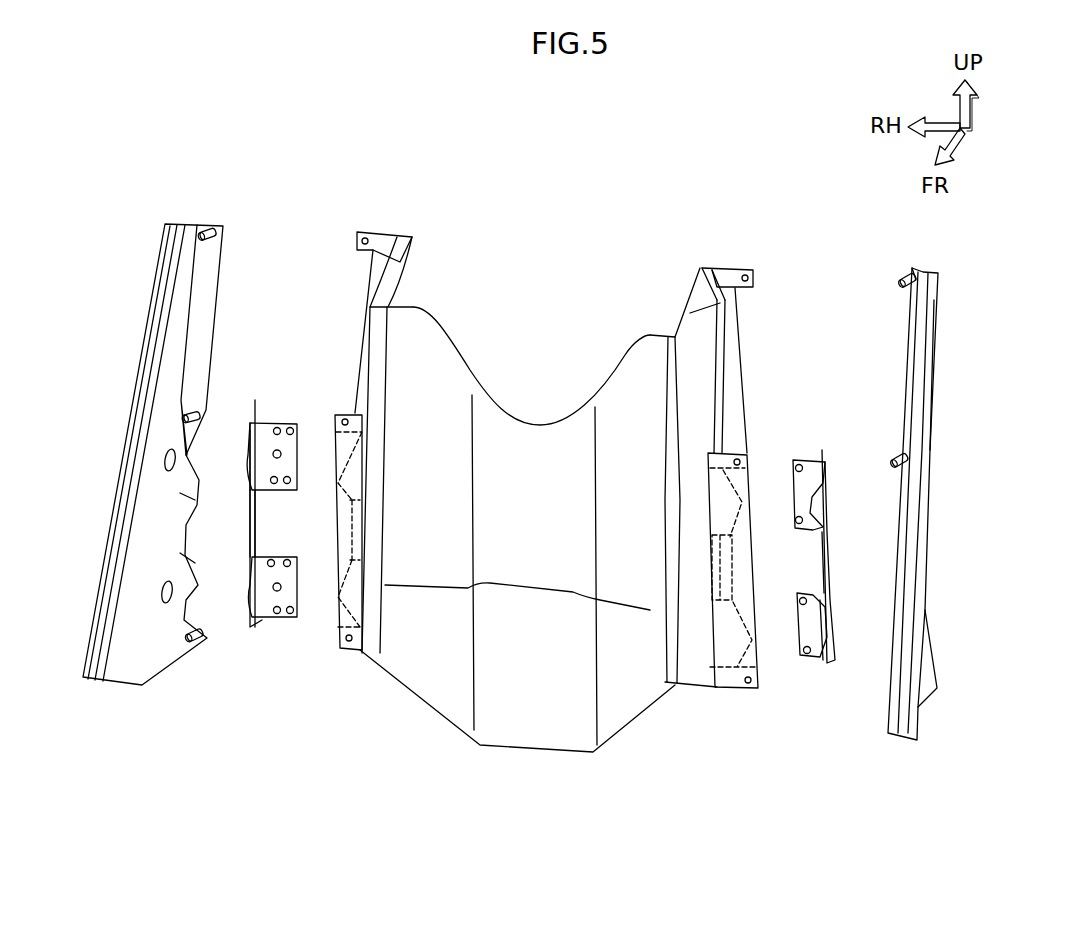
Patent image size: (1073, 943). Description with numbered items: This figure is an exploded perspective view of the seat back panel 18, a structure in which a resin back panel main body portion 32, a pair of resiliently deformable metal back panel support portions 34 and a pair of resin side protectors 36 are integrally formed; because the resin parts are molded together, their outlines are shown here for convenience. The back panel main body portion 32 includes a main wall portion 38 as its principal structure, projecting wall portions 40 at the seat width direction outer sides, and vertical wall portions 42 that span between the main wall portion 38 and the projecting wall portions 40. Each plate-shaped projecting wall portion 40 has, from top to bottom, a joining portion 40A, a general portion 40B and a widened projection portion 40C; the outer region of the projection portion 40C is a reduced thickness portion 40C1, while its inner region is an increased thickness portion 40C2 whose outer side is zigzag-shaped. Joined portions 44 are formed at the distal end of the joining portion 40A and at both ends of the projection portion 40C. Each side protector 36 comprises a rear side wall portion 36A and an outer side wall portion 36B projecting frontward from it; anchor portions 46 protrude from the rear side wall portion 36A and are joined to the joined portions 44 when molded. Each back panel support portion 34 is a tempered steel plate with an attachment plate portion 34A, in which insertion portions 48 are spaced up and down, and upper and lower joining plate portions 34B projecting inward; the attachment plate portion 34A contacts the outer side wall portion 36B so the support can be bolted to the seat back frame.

The seat back panel 18 is at (328, 792).
The back panel main body portion 32 is at (435, 745).
The back panel support portion 34 is at (247, 542).
The attachment plate portion 34A is at (257, 480).
The joining plate portion 34B is at (283, 482).
The side protector 36 is at (140, 300).
The rear side wall portion 36A is at (212, 287).
The outer side wall portion 36B is at (186, 222).
The main wall portion 38 is at (522, 440).
The projecting wall portion 40 is at (542, 428).
The joining portion 40A is at (395, 240).
The general portion 40B is at (370, 265).
The projection portion 40C is at (338, 632).
The reduced thickness portion 40C1 is at (343, 545).
The increased thickness portion 40C2 is at (352, 470).
The vertical wall portion 42 is at (385, 298).
The joined portion 44 is at (380, 230).
The anchor portion 46 is at (215, 232).
The insertion portion 48 is at (252, 455).